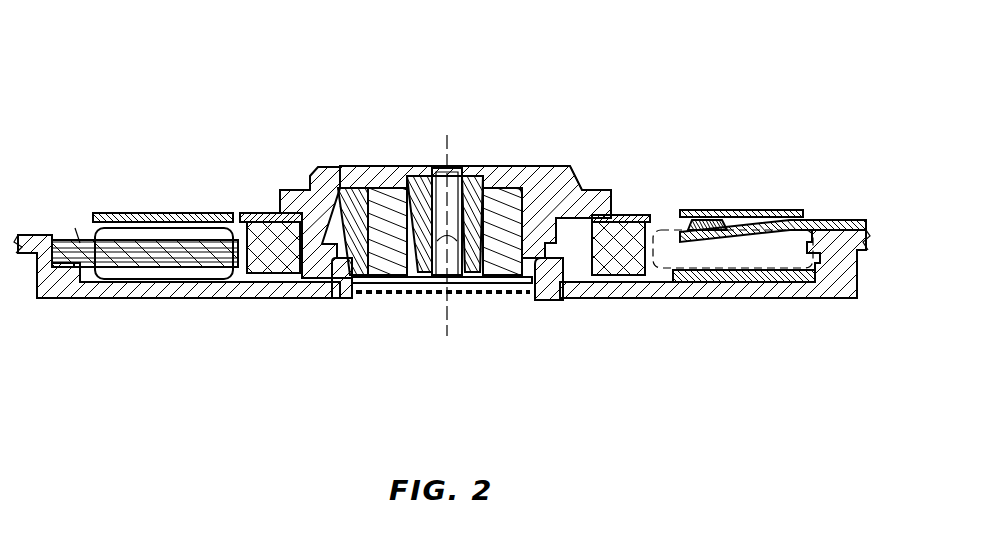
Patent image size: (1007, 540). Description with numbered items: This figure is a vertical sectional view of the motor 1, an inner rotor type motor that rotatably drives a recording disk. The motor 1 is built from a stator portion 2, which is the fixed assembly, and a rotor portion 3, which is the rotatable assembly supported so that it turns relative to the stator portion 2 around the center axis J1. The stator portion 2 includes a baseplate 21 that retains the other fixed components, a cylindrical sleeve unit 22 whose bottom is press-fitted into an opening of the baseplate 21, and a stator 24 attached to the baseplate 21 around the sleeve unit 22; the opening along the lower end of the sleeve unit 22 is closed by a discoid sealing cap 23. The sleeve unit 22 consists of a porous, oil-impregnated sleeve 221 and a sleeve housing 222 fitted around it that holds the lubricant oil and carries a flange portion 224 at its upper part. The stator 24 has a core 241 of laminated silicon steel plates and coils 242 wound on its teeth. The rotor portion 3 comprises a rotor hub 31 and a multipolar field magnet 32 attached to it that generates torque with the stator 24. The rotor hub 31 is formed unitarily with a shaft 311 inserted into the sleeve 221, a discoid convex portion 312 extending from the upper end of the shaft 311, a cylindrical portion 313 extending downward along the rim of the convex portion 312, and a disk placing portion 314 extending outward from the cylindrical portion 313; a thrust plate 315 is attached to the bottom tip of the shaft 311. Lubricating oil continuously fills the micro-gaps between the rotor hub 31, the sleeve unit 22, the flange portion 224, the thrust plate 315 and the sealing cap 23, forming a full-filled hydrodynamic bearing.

The motor 1 is at (131, 164).
The stator portion 2 is at (148, 462).
The baseplate 21 is at (237, 288).
The sleeve unit 22 is at (328, 380).
The sleeve 221 is at (383, 260).
The sleeve housing 222 is at (334, 293).
The flange portion 224 is at (336, 196).
The sealing cap 23 is at (413, 300).
The stator 24 is at (108, 380).
The core 241 is at (147, 252).
The coils 242 is at (181, 268).
The rotor portion 3 is at (677, 95).
The rotor hub 31 is at (581, 80).
The shaft 311 is at (465, 192).
The convex portion 312 is at (503, 180).
The cylindrical portion 313 is at (556, 206).
The disk placing portion 314 is at (603, 196).
The thrust plate 315 is at (510, 287).
The field magnet 32 is at (648, 236).
The center axis J1 is at (444, 146).